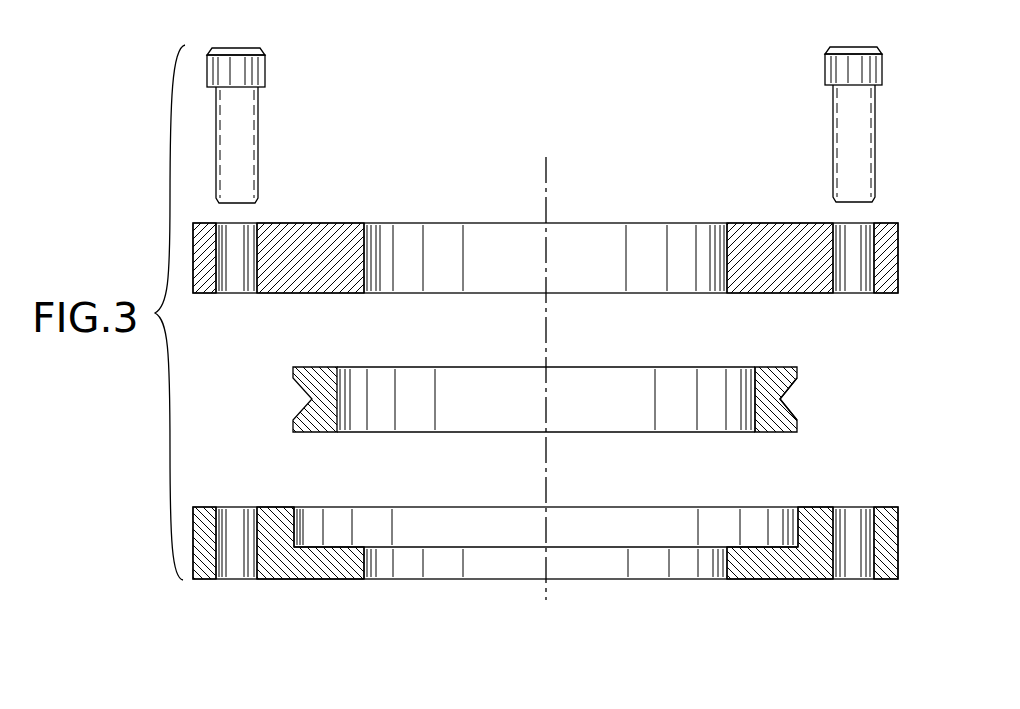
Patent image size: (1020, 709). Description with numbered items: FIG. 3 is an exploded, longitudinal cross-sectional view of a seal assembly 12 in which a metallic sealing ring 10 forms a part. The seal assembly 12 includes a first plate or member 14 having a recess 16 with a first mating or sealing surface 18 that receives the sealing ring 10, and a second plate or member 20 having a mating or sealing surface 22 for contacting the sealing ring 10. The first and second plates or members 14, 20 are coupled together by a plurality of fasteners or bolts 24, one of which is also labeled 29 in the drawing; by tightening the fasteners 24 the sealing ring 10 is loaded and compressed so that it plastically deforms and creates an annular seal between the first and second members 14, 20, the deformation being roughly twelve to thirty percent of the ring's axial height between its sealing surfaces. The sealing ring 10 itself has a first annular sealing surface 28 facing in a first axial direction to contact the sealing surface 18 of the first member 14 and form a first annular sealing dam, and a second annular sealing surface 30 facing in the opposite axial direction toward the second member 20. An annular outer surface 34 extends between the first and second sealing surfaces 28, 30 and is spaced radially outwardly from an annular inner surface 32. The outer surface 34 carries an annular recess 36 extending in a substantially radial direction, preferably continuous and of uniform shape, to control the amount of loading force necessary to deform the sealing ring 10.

The metallic sealing ring 10 is at (285, 396).
The seal assembly 12 is at (517, 128).
The first plate or member 14 is at (544, 511).
The recess 16 is at (296, 521).
The first mating or sealing surface 18 is at (336, 547).
The second plate or member 20 is at (545, 267).
The mating or sealing surface 22 is at (306, 294).
The fasteners or bolts 24 is at (825, 79).
The first annular sealing surface 28 is at (604, 440).
The bolt 29 is at (268, 83).
The second annular sealing surface 30 is at (605, 404).
The annular inner surface 32 is at (748, 397).
The annular outer surface 34 is at (805, 375).
The annular recess 36 is at (789, 406).